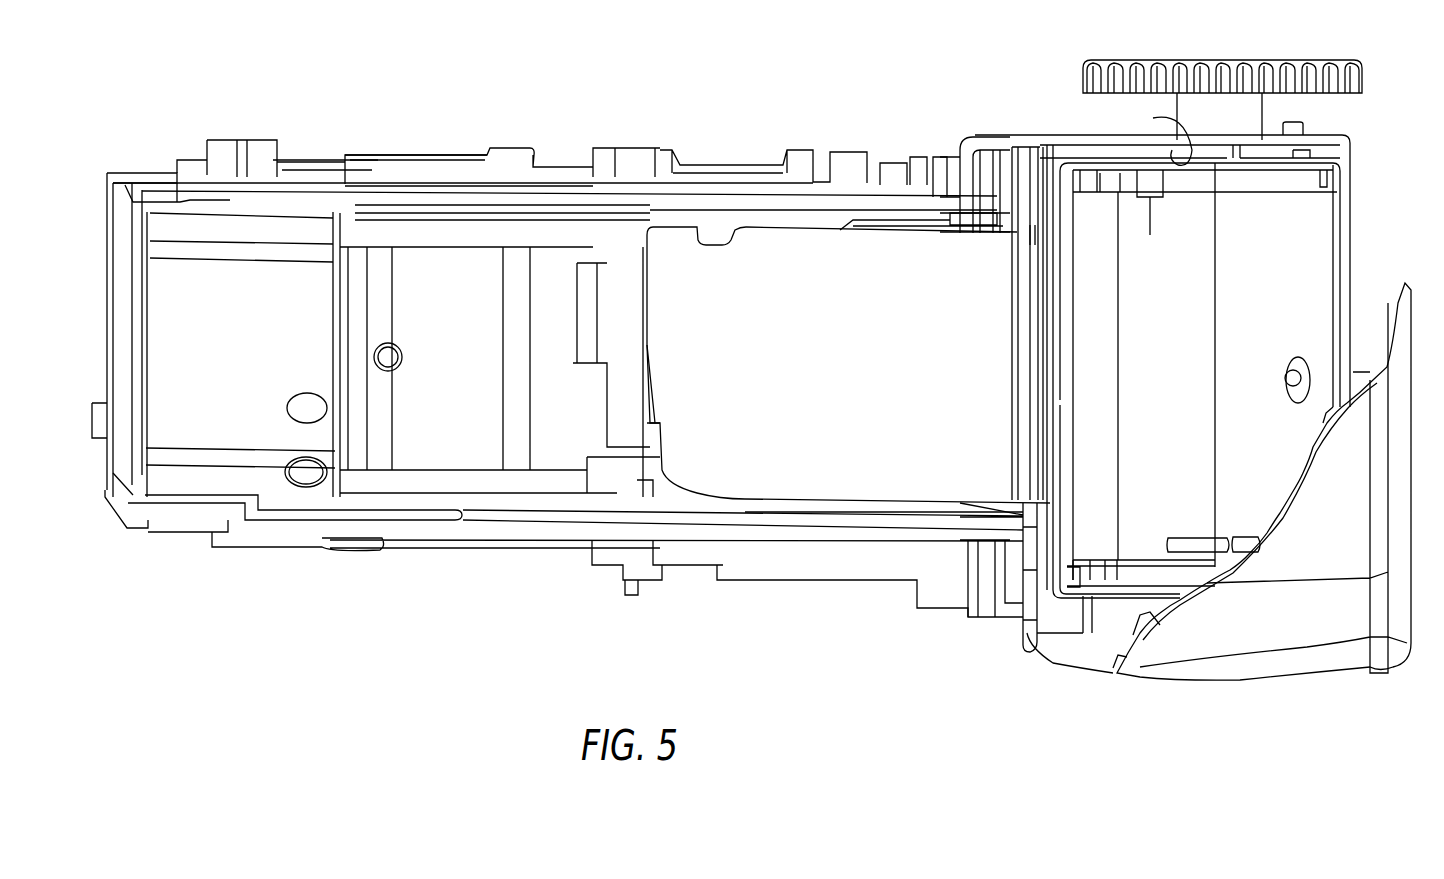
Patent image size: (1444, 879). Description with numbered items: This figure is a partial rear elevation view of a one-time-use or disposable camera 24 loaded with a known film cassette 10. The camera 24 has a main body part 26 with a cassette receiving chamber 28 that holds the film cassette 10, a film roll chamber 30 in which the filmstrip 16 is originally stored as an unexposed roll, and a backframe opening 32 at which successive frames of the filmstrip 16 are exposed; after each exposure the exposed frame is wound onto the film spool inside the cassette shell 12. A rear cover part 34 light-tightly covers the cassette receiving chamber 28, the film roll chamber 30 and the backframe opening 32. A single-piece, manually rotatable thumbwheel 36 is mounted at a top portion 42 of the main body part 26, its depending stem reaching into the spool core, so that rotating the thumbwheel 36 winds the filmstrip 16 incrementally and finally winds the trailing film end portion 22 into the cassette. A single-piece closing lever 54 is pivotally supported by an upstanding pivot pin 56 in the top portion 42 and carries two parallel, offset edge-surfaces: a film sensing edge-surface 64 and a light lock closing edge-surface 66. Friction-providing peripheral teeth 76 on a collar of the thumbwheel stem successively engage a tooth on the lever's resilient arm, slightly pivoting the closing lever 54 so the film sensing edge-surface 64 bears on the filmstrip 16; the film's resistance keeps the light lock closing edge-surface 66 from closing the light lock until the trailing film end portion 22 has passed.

The film cassette 10 is at (1316, 237).
The cassette shell 12 is at (1270, 270).
The filmstrip 16 is at (788, 500).
The trailing film end portion 22 is at (828, 366).
The camera 24 is at (650, 122).
The main body part 26 is at (422, 153).
The cassette receiving chamber 28 is at (1113, 620).
The film roll chamber 30 is at (275, 362).
The backframe opening 32 is at (655, 420).
The rear cover part 34 is at (1177, 653).
The thumbwheel 36 is at (1097, 62).
The top portion 42 is at (1012, 150).
The closing lever 54 is at (1110, 150).
The upstanding pivot pin 56 is at (1305, 130).
The film sensing edge-surface 64 is at (1008, 145).
The light lock closing edge-surface 66 is at (1033, 232).
The peripheral teeth 76 is at (1178, 160).